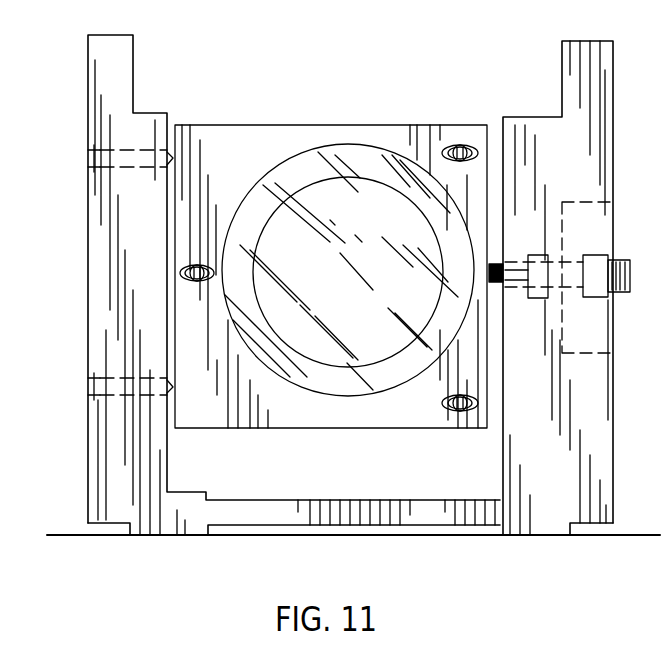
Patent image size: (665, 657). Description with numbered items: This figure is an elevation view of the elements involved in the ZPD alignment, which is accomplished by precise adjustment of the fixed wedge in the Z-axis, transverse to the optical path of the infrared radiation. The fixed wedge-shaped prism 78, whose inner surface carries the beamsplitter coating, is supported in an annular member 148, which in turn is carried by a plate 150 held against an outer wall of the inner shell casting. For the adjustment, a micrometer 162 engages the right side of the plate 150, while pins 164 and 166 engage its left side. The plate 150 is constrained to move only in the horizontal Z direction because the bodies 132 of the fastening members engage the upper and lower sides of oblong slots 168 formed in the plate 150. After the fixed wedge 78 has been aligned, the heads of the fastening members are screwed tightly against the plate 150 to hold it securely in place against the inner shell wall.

The fixed wedge-shaped prism 78 is at (302, 172).
The bodies of the fastening members 132 is at (196, 283).
The annular member 148 is at (375, 162).
The plate 150 is at (230, 148).
The micrometer 162 is at (593, 272).
The pin 164 is at (112, 152).
The pin 166 is at (112, 380).
The oblong slots 168 is at (186, 268).